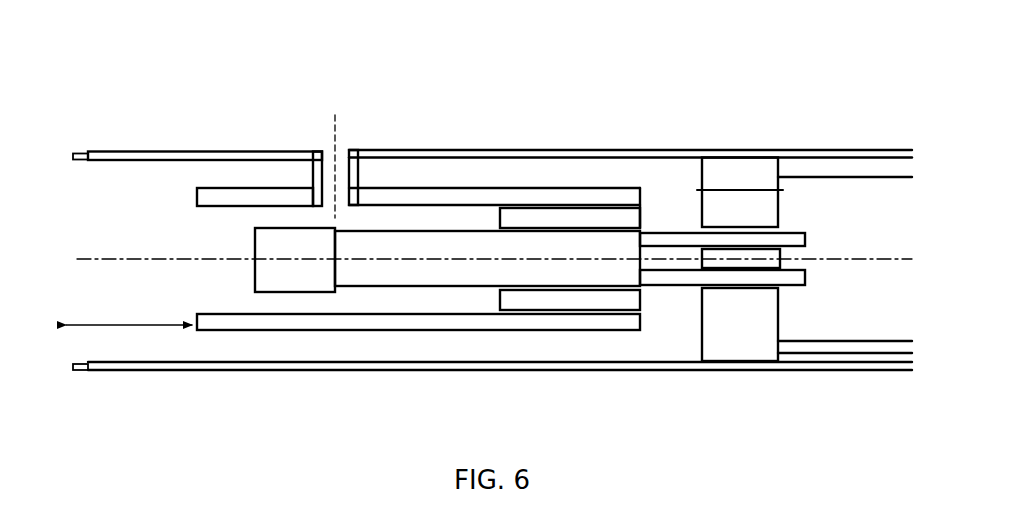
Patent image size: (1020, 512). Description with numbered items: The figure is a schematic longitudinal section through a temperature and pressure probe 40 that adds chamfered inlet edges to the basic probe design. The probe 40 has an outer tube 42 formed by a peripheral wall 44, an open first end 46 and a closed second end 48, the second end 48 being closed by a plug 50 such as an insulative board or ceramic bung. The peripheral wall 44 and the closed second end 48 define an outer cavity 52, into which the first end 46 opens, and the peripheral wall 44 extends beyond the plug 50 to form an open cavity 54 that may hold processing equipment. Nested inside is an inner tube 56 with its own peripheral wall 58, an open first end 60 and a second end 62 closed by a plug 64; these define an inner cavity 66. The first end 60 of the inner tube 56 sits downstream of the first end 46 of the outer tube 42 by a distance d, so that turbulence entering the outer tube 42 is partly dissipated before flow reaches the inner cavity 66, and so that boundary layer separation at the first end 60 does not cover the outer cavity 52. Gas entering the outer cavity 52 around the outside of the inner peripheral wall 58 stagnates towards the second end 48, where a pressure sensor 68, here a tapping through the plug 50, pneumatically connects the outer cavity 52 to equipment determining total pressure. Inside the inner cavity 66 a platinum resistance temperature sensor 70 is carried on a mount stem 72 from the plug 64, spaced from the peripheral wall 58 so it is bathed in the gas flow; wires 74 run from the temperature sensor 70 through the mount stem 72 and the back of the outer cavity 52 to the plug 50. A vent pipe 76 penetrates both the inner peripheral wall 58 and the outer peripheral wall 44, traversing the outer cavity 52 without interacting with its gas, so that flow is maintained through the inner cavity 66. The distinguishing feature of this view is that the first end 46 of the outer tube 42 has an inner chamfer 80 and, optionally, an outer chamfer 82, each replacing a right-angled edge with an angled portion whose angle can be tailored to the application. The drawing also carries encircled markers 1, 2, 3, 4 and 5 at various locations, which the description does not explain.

The temperature and pressure probe 40 is at (195, 100).
The outer tube 42 is at (98, 169).
The peripheral wall 44 is at (402, 149).
The first end 46 is at (110, 152).
The second end 48 is at (697, 148).
The plug 50 is at (722, 168).
The outer cavity 52 is at (193, 175).
The open cavity 54 is at (857, 223).
The inner tube 56 is at (182, 200).
The peripheral wall 58 is at (446, 198).
The first end 60 is at (207, 327).
The second end 62 is at (584, 322).
The plug 64 is at (523, 300).
The inner cavity 66 is at (220, 284).
The pressure sensor 68 is at (757, 185).
The temperature sensor 70 is at (312, 276).
The mount stem 72 is at (418, 276).
The wires 74 is at (680, 277).
The vent pipe 76 is at (316, 152).
The inner chamfer 80 is at (80, 362).
The outer chamfer 82 is at (83, 372).
The position 1 is at (212, 200).
The position 2 is at (137, 162).
The position 3 is at (351, 150).
The position 4 is at (633, 217).
The position 5 is at (858, 165).
The distance d is at (129, 308).